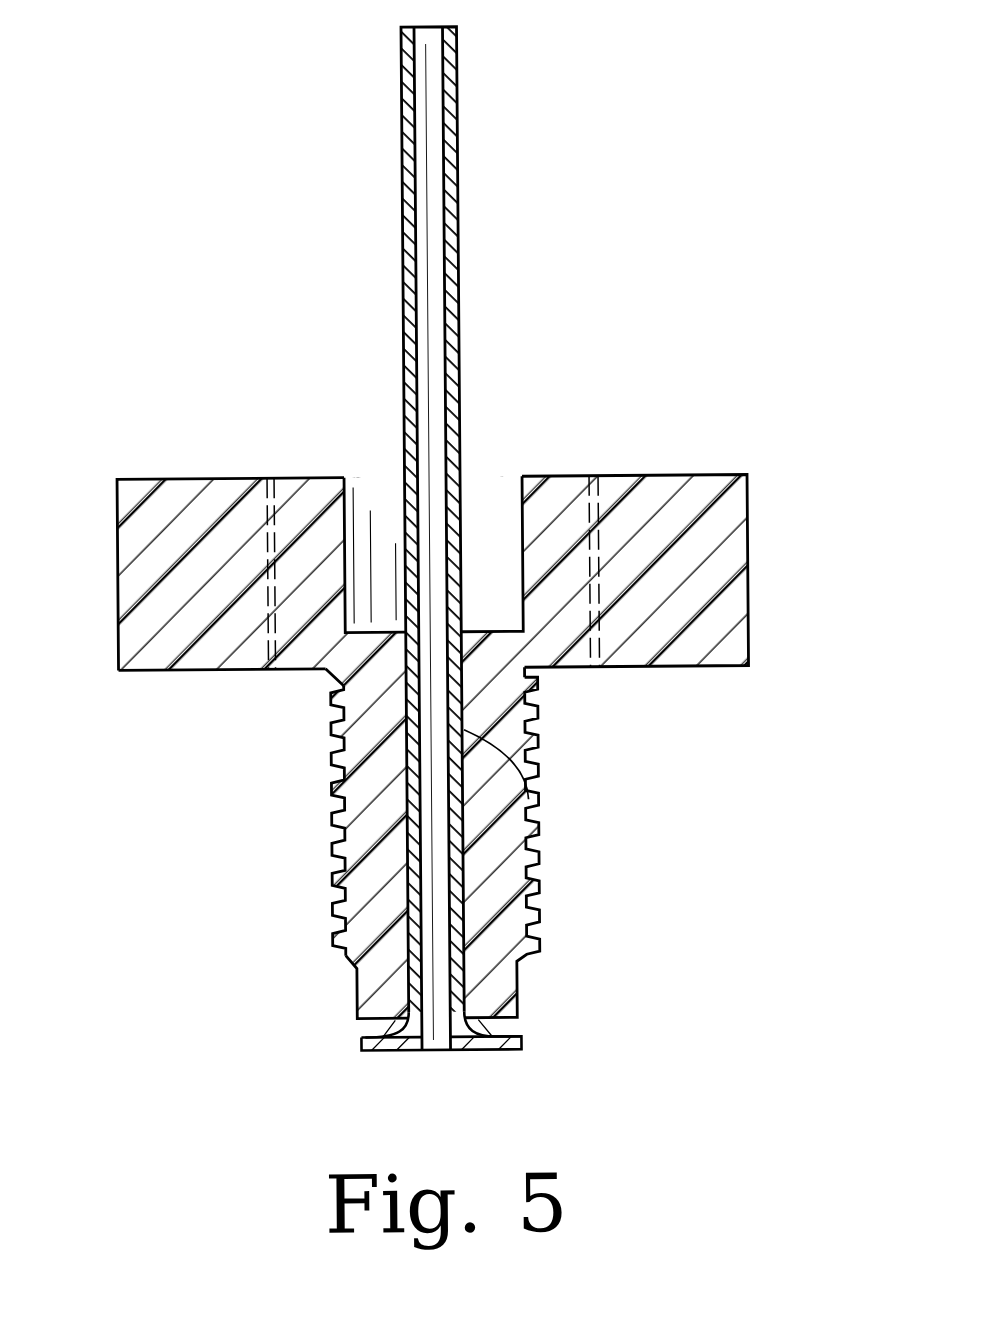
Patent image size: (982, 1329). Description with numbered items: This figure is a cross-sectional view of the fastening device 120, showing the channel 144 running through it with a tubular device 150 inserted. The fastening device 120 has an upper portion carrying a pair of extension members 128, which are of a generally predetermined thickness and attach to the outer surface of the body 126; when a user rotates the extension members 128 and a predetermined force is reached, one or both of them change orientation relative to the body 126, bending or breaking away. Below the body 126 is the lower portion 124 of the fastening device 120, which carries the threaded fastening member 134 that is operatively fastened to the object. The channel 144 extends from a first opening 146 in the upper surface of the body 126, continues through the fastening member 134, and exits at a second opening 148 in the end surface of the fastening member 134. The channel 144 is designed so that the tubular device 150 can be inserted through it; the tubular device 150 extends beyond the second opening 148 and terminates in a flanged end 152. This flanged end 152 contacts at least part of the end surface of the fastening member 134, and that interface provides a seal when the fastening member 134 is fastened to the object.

The fastening device 120 is at (170, 390).
The lower portion 124 is at (585, 876).
The body 126 is at (578, 696).
The extension members 128 is at (687, 450).
The fastening member 134 is at (332, 803).
The channel 144 is at (528, 802).
The first opening 146 is at (466, 477).
The second opening 148 is at (403, 1032).
The tubular device 150 is at (461, 292).
The flanged end 152 is at (497, 1050).